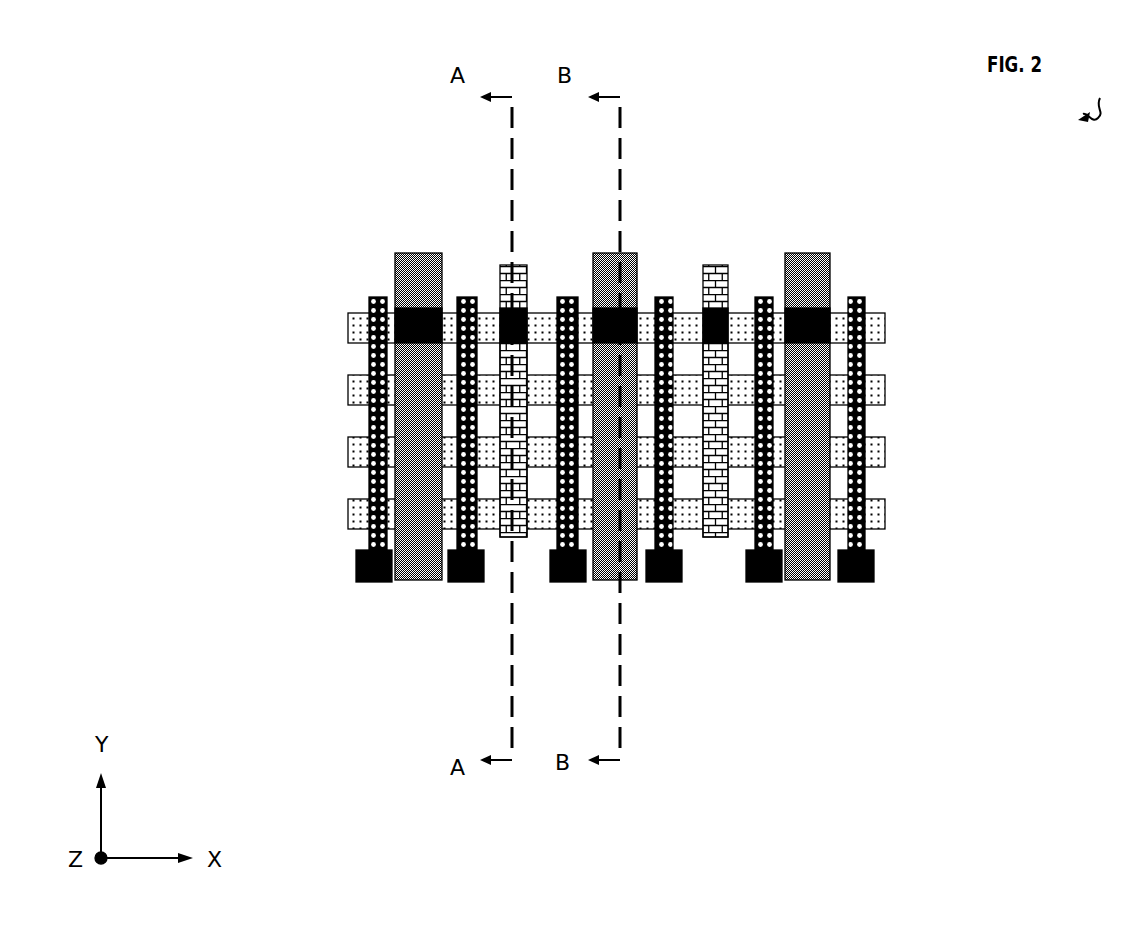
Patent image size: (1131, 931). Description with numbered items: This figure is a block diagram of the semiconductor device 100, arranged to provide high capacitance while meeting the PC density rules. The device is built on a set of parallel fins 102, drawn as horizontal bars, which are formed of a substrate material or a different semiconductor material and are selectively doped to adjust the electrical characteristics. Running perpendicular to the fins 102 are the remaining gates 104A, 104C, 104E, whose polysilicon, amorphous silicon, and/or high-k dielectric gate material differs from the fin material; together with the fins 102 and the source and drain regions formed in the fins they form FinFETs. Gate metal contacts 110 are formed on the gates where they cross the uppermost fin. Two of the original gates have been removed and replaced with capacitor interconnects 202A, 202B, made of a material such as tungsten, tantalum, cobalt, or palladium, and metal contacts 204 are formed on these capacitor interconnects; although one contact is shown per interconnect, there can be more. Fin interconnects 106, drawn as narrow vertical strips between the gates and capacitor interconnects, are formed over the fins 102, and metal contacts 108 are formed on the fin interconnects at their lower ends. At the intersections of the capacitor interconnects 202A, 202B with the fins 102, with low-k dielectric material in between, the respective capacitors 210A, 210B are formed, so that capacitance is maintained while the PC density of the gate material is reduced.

The semiconductor device 100 is at (1087, 92).
The fins 102 is at (885, 458).
The gate 104A is at (413, 246).
The gate 104C is at (614, 246).
The gate 104E is at (812, 246).
The fin interconnects 106 is at (369, 300).
The metal contacts 108 is at (356, 565).
The gate metal contacts 110 is at (815, 315).
The capacitor interconnect 202A is at (505, 265).
The capacitor interconnect 202B is at (720, 265).
The metal contacts 204 is at (527, 325).
The capacitor 210A is at (528, 562).
The capacitor 210B is at (724, 562).